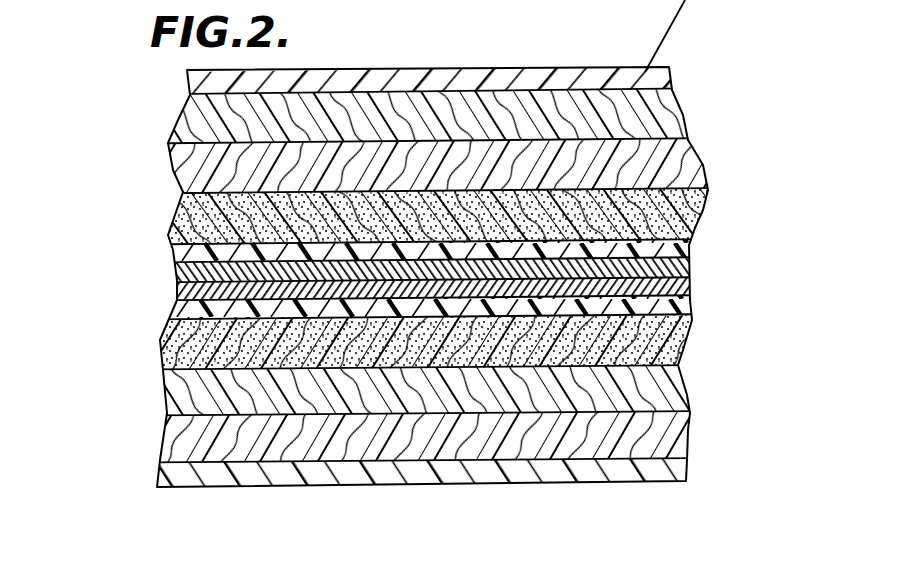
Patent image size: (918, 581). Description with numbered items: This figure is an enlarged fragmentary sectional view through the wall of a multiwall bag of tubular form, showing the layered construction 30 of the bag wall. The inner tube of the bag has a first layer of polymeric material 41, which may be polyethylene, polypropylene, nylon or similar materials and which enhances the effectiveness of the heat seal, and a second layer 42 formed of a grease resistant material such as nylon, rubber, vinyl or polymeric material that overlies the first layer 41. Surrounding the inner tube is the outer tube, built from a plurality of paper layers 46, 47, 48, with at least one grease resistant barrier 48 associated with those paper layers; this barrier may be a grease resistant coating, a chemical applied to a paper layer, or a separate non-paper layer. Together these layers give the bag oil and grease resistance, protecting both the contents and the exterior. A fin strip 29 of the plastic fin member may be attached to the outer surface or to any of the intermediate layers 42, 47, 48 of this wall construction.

The fin strip 29 is at (228, 480).
The laminate structure 30 is at (583, 0).
The layer of polymeric material 41 is at (176, 270).
The second layer 42 is at (172, 250).
The paper layer 46 is at (663, 113).
The paper layer 47 is at (692, 165).
The grease resistant barrier 48 is at (702, 207).